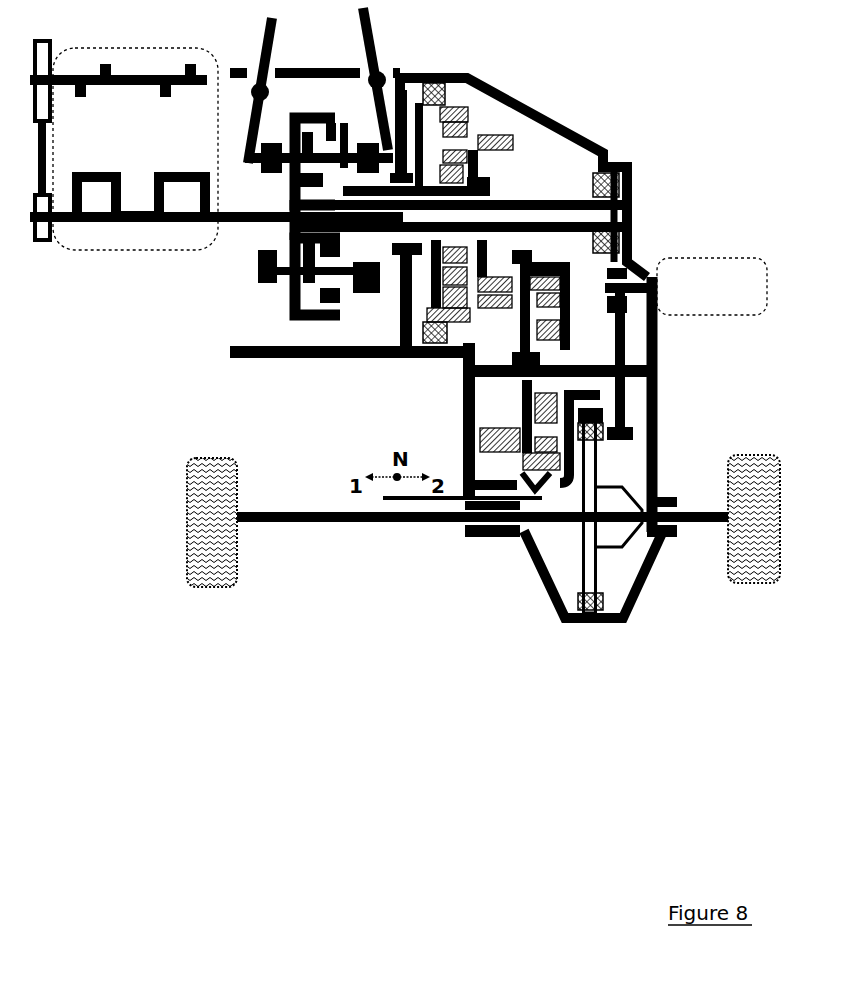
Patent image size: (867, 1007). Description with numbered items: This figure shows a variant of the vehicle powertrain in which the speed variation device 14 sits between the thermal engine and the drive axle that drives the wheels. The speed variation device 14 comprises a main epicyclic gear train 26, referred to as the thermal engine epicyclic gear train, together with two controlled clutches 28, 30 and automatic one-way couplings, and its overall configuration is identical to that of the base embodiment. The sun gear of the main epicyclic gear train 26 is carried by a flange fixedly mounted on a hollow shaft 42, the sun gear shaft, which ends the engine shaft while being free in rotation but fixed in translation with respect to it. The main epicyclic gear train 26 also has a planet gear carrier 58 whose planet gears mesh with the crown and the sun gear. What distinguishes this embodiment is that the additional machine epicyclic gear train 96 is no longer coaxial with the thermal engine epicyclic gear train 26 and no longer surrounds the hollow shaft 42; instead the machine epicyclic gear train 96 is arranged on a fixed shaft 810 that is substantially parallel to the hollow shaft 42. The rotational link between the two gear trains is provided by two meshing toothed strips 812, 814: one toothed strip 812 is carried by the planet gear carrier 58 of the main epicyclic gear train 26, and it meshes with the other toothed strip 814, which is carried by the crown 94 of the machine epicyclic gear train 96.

The speed variation device 14 is at (386, 330).
The main epicyclic gear train 26 is at (478, 117).
The controlled clutch 28 is at (297, 233).
The controlled clutch 30 is at (293, 117).
The hollow shaft 42 is at (530, 217).
The planet gear carrier 58 is at (483, 173).
The crown 94 is at (522, 418).
The machine epicyclic gear train 96 is at (587, 293).
The fixed shaft 810 is at (653, 390).
The toothed strip 812 is at (493, 157).
The toothed strip 814 is at (465, 450).